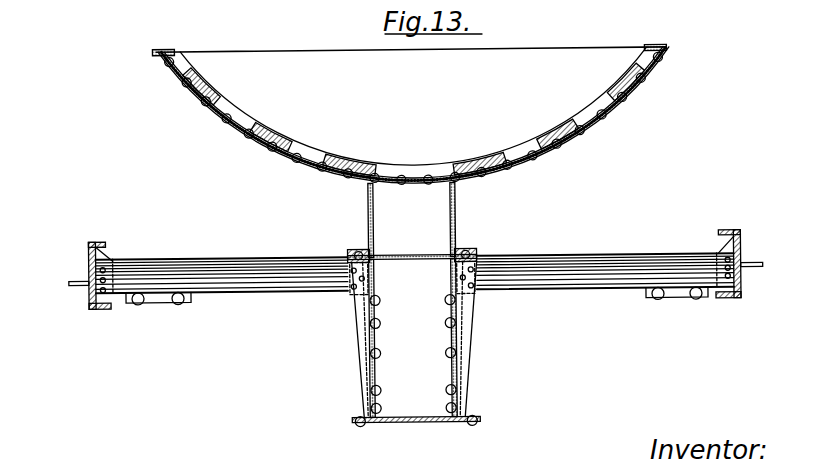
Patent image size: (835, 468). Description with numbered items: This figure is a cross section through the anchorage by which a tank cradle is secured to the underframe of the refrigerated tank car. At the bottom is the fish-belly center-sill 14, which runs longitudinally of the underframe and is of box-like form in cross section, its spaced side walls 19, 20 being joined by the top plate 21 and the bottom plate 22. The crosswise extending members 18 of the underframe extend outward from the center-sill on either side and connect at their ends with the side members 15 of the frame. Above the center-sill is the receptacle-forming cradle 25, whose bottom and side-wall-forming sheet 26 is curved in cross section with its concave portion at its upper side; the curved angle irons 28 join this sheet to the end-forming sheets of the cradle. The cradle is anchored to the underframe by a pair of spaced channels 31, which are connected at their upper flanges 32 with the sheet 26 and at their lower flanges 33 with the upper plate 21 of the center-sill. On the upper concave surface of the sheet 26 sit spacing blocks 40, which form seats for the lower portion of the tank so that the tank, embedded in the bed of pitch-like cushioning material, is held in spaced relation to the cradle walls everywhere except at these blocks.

The center-sill 14 is at (432, 359).
The side members 15 is at (86, 253).
The crosswise extending members 18 is at (527, 280).
The side wall of center-sill 19 is at (368, 346).
The side wall of center-sill 20 is at (456, 346).
The top plate portion of center-sill 21 is at (412, 274).
The bottom plate portion of center-sill 22 is at (420, 424).
The cradle 25 is at (158, 50).
The bottom and side-wall-forming sheet 26 is at (224, 108).
The curved angle irons 28 is at (410, 164).
The channels 31 is at (368, 214).
The upper flanges 32 is at (352, 180).
The lower flanges 33 is at (350, 252).
The spacing blocks 40 is at (255, 125).